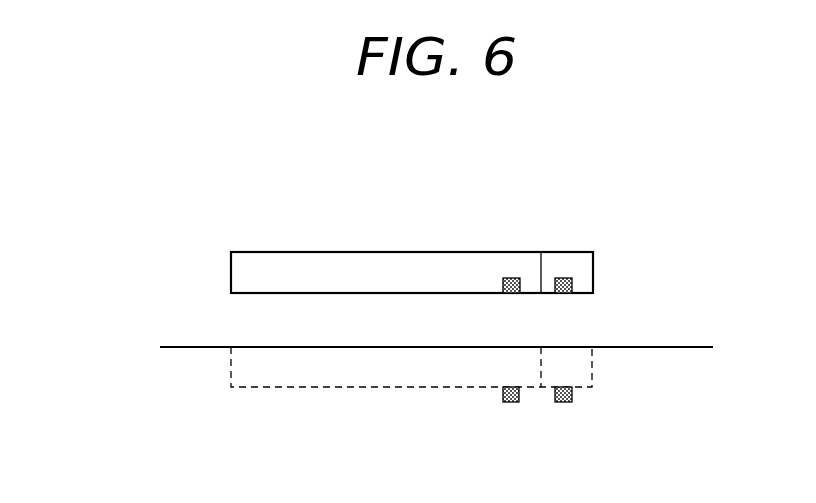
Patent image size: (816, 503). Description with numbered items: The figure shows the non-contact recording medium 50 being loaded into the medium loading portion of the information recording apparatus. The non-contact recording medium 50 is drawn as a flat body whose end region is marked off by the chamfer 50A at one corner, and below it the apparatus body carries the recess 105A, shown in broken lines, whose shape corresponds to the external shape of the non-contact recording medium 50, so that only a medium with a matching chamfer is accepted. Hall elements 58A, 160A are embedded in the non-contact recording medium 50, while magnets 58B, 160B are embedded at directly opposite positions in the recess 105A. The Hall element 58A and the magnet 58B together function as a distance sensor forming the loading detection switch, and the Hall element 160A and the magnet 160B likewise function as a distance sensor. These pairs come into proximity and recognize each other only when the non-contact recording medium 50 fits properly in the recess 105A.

The non-contact recording medium 50 is at (268, 251).
The chamfer 50A is at (583, 273).
The magnet 160B is at (508, 278).
The Hall element 58A is at (561, 278).
The recess 105A is at (258, 370).
The Hall element 160A is at (508, 402).
The magnet 58B is at (565, 402).